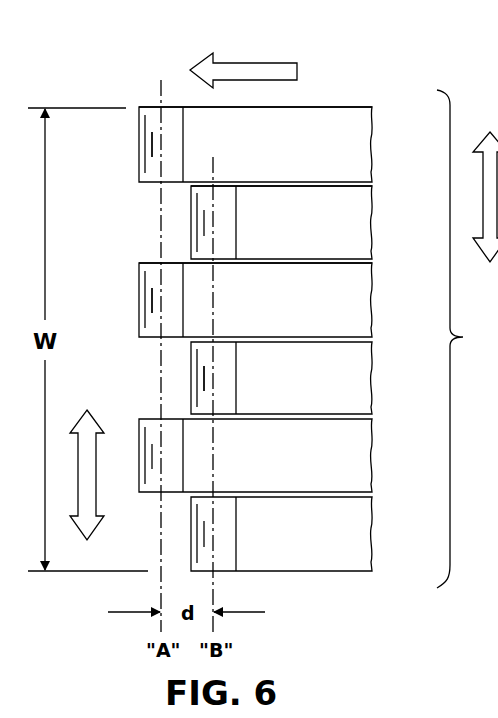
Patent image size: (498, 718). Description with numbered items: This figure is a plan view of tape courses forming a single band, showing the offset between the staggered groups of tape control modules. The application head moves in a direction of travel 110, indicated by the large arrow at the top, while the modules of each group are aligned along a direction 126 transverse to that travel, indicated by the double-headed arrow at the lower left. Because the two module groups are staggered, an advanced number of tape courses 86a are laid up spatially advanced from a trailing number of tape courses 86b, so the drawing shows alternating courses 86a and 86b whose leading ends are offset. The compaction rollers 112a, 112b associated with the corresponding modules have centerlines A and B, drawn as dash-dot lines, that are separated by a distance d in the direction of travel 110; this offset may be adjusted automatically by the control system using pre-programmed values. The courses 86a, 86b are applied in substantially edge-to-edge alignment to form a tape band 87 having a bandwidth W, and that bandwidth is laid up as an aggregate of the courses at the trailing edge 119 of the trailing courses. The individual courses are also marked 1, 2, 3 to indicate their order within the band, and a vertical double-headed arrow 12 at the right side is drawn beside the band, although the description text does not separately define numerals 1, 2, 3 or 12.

The direction of travel 110 is at (256, 62).
The trailing edge 119 is at (383, 107).
The advanced tape courses 86a is at (345, 161).
The trailing tape courses 86b is at (345, 241).
The first layer 1 is at (345, 129).
The second layer 2 is at (345, 206).
The third layer 3 is at (345, 284).
The compaction roller 112a is at (150, 138).
The compaction roller 112b is at (203, 377).
The tape band 87 is at (467, 339).
The transverse direction 126 is at (96, 500).
The vertical movement arrow 12 is at (482, 197).